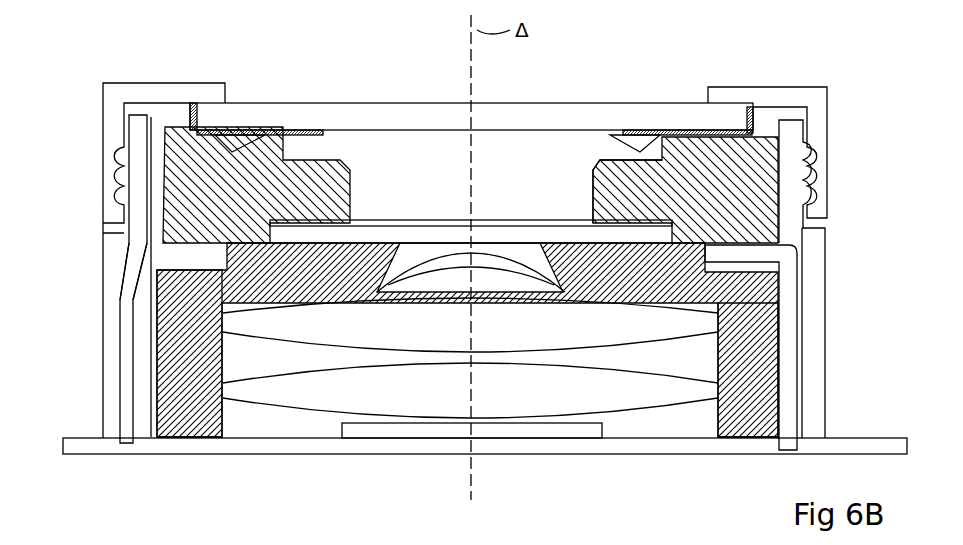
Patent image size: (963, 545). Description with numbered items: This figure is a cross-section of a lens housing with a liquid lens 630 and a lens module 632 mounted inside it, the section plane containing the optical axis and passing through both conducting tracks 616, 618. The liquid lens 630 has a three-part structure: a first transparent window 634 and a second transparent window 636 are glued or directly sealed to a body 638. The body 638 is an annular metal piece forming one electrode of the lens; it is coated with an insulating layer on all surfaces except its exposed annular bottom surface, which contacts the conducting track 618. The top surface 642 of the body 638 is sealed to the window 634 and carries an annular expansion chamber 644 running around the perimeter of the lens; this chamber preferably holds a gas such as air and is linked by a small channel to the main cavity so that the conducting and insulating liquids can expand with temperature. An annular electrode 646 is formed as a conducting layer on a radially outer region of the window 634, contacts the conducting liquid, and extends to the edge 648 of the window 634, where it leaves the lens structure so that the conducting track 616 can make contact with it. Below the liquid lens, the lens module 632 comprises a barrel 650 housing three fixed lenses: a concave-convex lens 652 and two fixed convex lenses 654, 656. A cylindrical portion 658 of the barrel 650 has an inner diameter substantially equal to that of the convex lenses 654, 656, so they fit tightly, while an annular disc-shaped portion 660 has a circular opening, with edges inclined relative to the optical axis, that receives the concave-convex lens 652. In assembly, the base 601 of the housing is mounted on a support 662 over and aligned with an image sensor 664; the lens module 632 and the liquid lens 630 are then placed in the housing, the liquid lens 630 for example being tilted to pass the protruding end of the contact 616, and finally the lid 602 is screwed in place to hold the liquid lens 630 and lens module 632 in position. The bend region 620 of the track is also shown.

The base 601 is at (833, 355).
The lid 602 is at (834, 110).
The conducting track 616 is at (125, 332).
The conducting track 618 is at (790, 285).
The bend of flexible connector 620 is at (147, 255).
The liquid lens 630 is at (355, 100).
The lens module 632 is at (748, 313).
The first transparent window 634 is at (503, 120).
The second transparent window 636 is at (483, 230).
The body 638 is at (617, 202).
The top surface 642 is at (643, 140).
The annular expansion chamber 644 is at (249, 108).
The annular electrode 646 is at (296, 108).
The edge 648 is at (207, 103).
The barrel 650 is at (709, 421).
The concave-convex lens 652 is at (483, 265).
The fixed convex lens 654 is at (622, 335).
The fixed convex lens 656 is at (620, 402).
The cylindrical portion 658 is at (197, 423).
The annular disc-shaped portion 660 is at (353, 250).
The support 662 is at (878, 446).
The image sensor 664 is at (535, 432).